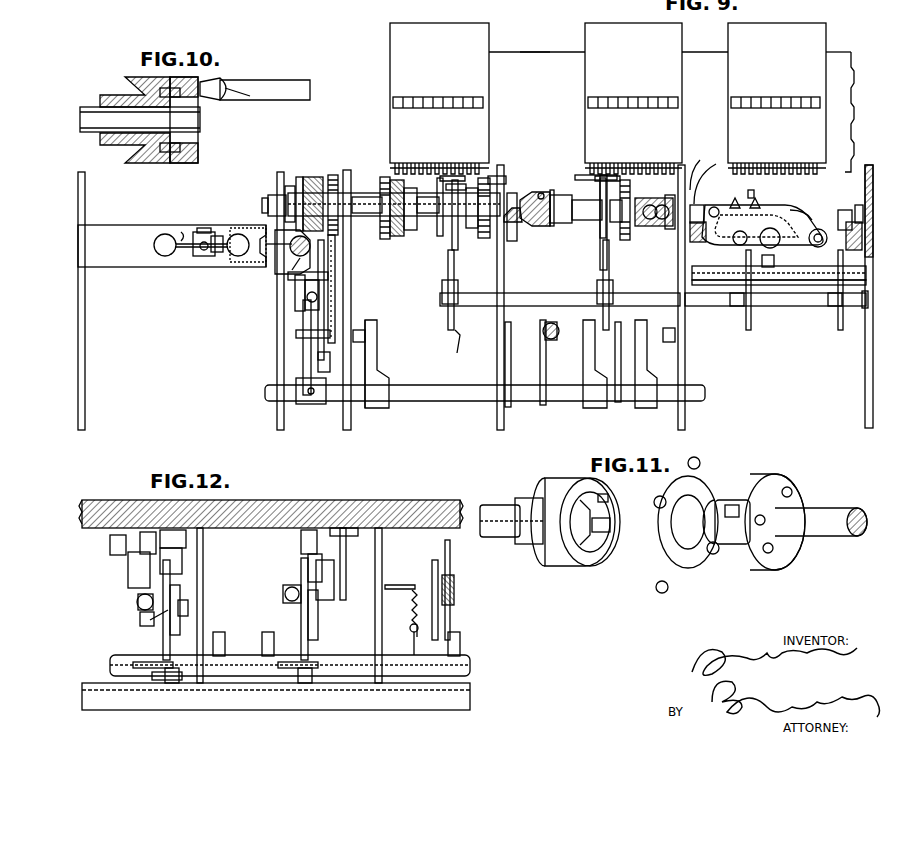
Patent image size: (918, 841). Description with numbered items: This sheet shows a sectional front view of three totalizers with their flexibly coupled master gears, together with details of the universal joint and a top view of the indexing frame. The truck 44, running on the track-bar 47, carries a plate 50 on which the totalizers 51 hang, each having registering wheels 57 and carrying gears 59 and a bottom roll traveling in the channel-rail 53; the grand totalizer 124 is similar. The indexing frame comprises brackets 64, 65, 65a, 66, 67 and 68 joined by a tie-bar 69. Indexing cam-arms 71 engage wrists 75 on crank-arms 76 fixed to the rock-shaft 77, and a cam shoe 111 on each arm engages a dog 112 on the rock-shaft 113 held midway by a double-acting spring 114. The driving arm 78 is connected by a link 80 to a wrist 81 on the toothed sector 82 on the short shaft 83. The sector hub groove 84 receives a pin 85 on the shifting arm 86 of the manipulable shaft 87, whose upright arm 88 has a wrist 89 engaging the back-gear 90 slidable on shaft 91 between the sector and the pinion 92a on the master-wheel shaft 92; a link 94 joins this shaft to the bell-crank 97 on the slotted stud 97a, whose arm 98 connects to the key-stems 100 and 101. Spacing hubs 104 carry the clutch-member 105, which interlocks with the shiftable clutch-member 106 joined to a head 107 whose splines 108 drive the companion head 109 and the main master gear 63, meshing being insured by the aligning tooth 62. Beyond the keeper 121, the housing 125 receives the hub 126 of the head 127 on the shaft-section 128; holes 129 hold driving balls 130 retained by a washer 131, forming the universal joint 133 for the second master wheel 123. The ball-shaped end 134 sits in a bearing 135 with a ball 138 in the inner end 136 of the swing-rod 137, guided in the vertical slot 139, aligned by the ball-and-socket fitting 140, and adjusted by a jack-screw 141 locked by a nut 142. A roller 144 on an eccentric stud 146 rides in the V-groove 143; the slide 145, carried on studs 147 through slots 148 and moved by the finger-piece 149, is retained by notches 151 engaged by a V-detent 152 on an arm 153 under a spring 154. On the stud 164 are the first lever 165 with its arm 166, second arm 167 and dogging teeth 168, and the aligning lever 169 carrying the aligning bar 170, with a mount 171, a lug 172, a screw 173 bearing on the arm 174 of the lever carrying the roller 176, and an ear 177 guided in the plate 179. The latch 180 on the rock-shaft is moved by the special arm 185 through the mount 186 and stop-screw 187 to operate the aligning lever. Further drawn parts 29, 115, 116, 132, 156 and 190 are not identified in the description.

In FIG. 9, the lever 29 is at (311, 350).
In FIG. 9, the truck 44 is at (506, 50).
In FIG. 12, the track-bar 47 is at (314, 499).
In FIG. 9, the plate 50 is at (535, 69).
In FIG. 9, the totalizer 51 is at (536, 93).
In FIG. 12, the channel-rail 53 is at (383, 710).
In FIG. 9, the registering wheels 57 is at (423, 97).
In FIG. 9, the carrying gears 59 is at (430, 163).
In FIG. 9, the aligning tooth 62 is at (500, 175).
In FIG. 9, the main master gear 63 is at (484, 240).
In FIG. 9, the bracket 64 is at (86, 370).
In FIG. 9, the bracket 65 is at (276, 416).
In FIG. 9, the bracket 65a is at (351, 422).
In FIG. 9, the bracket 66 is at (504, 420).
In FIG. 12, the bracket 66 is at (203, 600).
In FIG. 9, the bracket 67 is at (685, 362).
In FIG. 12, the bracket 67 is at (382, 558).
In FIG. 9, the bracket 68 is at (865, 393).
In FIG. 9, the tie-bar 69 is at (103, 267).
In FIG. 9, the indexing cam-arm 71 is at (752, 320).
In FIG. 12, the indexing cam-arm 71 is at (452, 592).
In FIG. 9, the wrist 75 is at (365, 336).
In FIG. 9, the crank-arm 76 is at (368, 368).
In FIG. 9, the rock-shaft 77 is at (405, 401).
In FIG. 9, the master-wheel-driving arm 78 is at (300, 405).
In FIG. 9, the link 80 is at (326, 335).
In FIG. 9, the wrist 81 is at (325, 270).
In FIG. 9, the toothed sector 82 is at (335, 250).
In FIG. 9, the short shaft 83 is at (288, 285).
In FIG. 9, the groove 84 is at (310, 310).
In FIG. 9, the pin 85 is at (295, 303).
In FIG. 9, the shifting arm 86 is at (292, 270).
In FIG. 9, the short shaft 87 is at (290, 256).
In FIG. 9, the upright arm 88 is at (284, 214).
In FIG. 9, the wrist 89 is at (300, 176).
In FIG. 9, the back-gear 90 is at (315, 177).
In FIG. 9, the shaft 91 is at (356, 196).
In FIG. 9, the master-wheel shaft 92 is at (272, 195).
In FIG. 11, the master-wheel shaft 92 is at (507, 504).
In FIG. 9, the pinion 92a is at (336, 176).
In FIG. 9, the link 94 is at (215, 235).
In FIG. 9, the three-armed bell-crank 97 is at (201, 218).
In FIG. 9, the slotted stud 97a is at (200, 252).
In FIG. 9, the arm 98 is at (183, 231).
In FIG. 9, the key-stem 100 is at (157, 248).
In FIG. 9, the key-stem 101 is at (237, 257).
In FIG. 9, the spacing hubs 104 is at (383, 218).
In FIG. 10, the spacing hubs 104 is at (140, 119).
In FIG. 9, the clutch-member 105 is at (383, 176).
In FIG. 9, the clutch-member 106 is at (396, 238).
In FIG. 9, the head 107 is at (414, 231).
In FIG. 9, the splines 108 is at (429, 205).
In FIG. 9, the companion head 109 is at (438, 230).
In FIG. 12, the cam shoe 111 is at (450, 625).
In FIG. 9, the dog 112 is at (835, 310).
In FIG. 12, the dog 112 is at (262, 638).
In FIG. 9, the rock-shaft 113 is at (530, 306).
In FIG. 12, the rock-shaft 113 is at (290, 665).
In FIG. 12, the double-acting spring 114 is at (410, 600).
In FIG. 9, the collar 115 is at (857, 299).
In FIG. 9, the bar 116 is at (716, 286).
In FIG. 9, the keeper 121 is at (515, 236).
In FIG. 9, the second master wheel 123 is at (618, 232).
In FIG. 9, the grand totalizer 124 is at (777, 93).
In FIG. 9, the housing 125 is at (526, 228).
In FIG. 10, the housing 125 is at (145, 160).
In FIG. 11, the housing 125 is at (556, 565).
In FIG. 11, the hub 126 is at (722, 548).
In FIG. 9, the head 127 is at (560, 224).
In FIG. 11, the head 127 is at (795, 560).
In FIG. 9, the shaft-section 128 is at (588, 221).
In FIG. 11, the shaft-section 128 is at (828, 536).
In FIG. 10, the holes 129 is at (182, 150).
In FIG. 11, the holes 129 is at (595, 506).
In FIG. 9, the driving balls 130 is at (543, 193).
In FIG. 11, the driving balls 130 is at (700, 460).
In FIG. 9, the washer 131 is at (553, 190).
In FIG. 11, the washer 131 is at (688, 568).
In FIG. 11, the hole 132 is at (792, 490).
In FIG. 9, the universal joint 133 is at (538, 168).
In FIG. 11, the universal joint 133 is at (590, 582).
In FIG. 9, the ball-shaped end 134 is at (630, 198).
In FIG. 9, the bearing 135 is at (650, 226).
In FIG. 9, the inner end 136 is at (660, 190).
In FIG. 9, the swing-rod 137 is at (810, 205).
In FIG. 9, the ball 138 is at (668, 230).
In FIG. 9, the vertical slot 139 is at (696, 166).
In FIG. 9, the ball-and-socket fitting 140 is at (860, 199).
In FIG. 9, the jack-screw 141 is at (842, 208).
In FIG. 9, the nut 142 is at (856, 236).
In FIG. 9, the V-groove 143 is at (708, 178).
In FIG. 9, the roller 144 is at (710, 265).
In FIG. 9, the slide 145 is at (775, 299).
In FIG. 9, the eccentric stud 146 is at (696, 243).
In FIG. 9, the studs 147 is at (818, 247).
In FIG. 9, the slots 148 is at (768, 230).
In FIG. 9, the finger-piece 149 is at (775, 215).
In FIG. 9, the notches 151 is at (735, 196).
In FIG. 9, the V-detent 152 is at (758, 196).
In FIG. 9, the arm 153 is at (784, 163).
In FIG. 9, the spring 154 is at (694, 214).
In FIG. 9, the stud 156 is at (774, 262).
In FIG. 12, the stud 164 is at (128, 575).
In FIG. 12, the first lever 165 is at (185, 612).
In FIG. 12, the arm 166 is at (330, 552).
In FIG. 12, the second arm 167 is at (182, 560).
In FIG. 12, the dogging teeth 168 is at (186, 545).
In FIG. 9, the aligning lever 169 is at (600, 194).
In FIG. 12, the aligning lever 169 is at (163, 640).
In FIG. 9, the aligning bar 170 is at (452, 174).
In FIG. 12, the aligning bar 170 is at (140, 670).
In FIG. 12, the mount 171 is at (150, 620).
In FIG. 9, the lug 172 is at (452, 243).
In FIG. 12, the screw 173 is at (138, 598).
In FIG. 12, the arm 174 is at (140, 612).
In FIG. 12, the roller 176 is at (140, 545).
In FIG. 12, the ear 177 is at (172, 683).
In FIG. 12, the plate 179 is at (180, 680).
In FIG. 9, the latch 180 is at (448, 312).
In FIG. 9, the special arm 185 is at (541, 350).
In FIG. 9, the mount 186 is at (455, 338).
In FIG. 9, the stop-screw 187 is at (565, 350).
In FIG. 12, the bar 190 is at (346, 548).